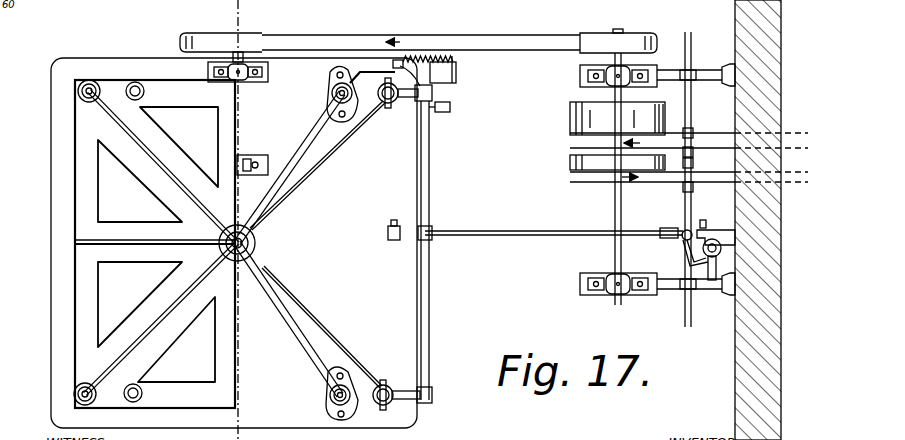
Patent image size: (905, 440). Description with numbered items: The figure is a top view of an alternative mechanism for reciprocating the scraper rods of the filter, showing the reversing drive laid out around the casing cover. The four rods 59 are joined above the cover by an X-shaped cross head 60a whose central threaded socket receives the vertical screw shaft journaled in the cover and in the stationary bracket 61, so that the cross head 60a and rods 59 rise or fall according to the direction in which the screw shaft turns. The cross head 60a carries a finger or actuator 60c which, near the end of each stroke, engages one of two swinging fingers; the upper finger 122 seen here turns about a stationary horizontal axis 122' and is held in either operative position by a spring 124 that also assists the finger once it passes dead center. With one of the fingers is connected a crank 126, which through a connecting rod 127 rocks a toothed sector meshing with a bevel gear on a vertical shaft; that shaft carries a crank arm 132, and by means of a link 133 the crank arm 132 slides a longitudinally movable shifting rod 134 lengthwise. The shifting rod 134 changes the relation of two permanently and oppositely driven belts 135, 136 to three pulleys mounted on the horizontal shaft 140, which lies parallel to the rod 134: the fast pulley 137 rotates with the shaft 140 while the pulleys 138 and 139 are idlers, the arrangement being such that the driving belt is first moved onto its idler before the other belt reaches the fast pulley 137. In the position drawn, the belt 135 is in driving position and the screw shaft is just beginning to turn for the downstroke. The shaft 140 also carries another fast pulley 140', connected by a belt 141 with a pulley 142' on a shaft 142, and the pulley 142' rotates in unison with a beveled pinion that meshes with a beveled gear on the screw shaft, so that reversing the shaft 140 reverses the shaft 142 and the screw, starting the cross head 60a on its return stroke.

The rods 59 is at (330, 98).
The X-shaped cross head 60a is at (265, 206).
The finger or actuator 60c is at (370, 75).
The stationary bracket 61 is at (171, 244).
The upper finger 122 is at (446, 84).
The stationary horizontal axis 122' is at (431, 352).
The spring 124 is at (437, 57).
The crank 126 is at (418, 224).
The connecting rod 127 is at (486, 231).
The crank arm 132 is at (682, 255).
The link 133 is at (716, 222).
The shifting rod 134 is at (691, 112).
The driving belt 135 is at (570, 143).
The driving belt 136 is at (570, 177).
The fast pulley 137 is at (570, 132).
The idler pulley 138 is at (617, 118).
The idler pulley 139 is at (592, 185).
The horizontal shaft 140 is at (640, 179).
The fast pulley 140' is at (635, 29).
The belt 141 is at (483, 43).
The shaft 142 is at (221, 33).
The pulley 142' is at (346, 28).